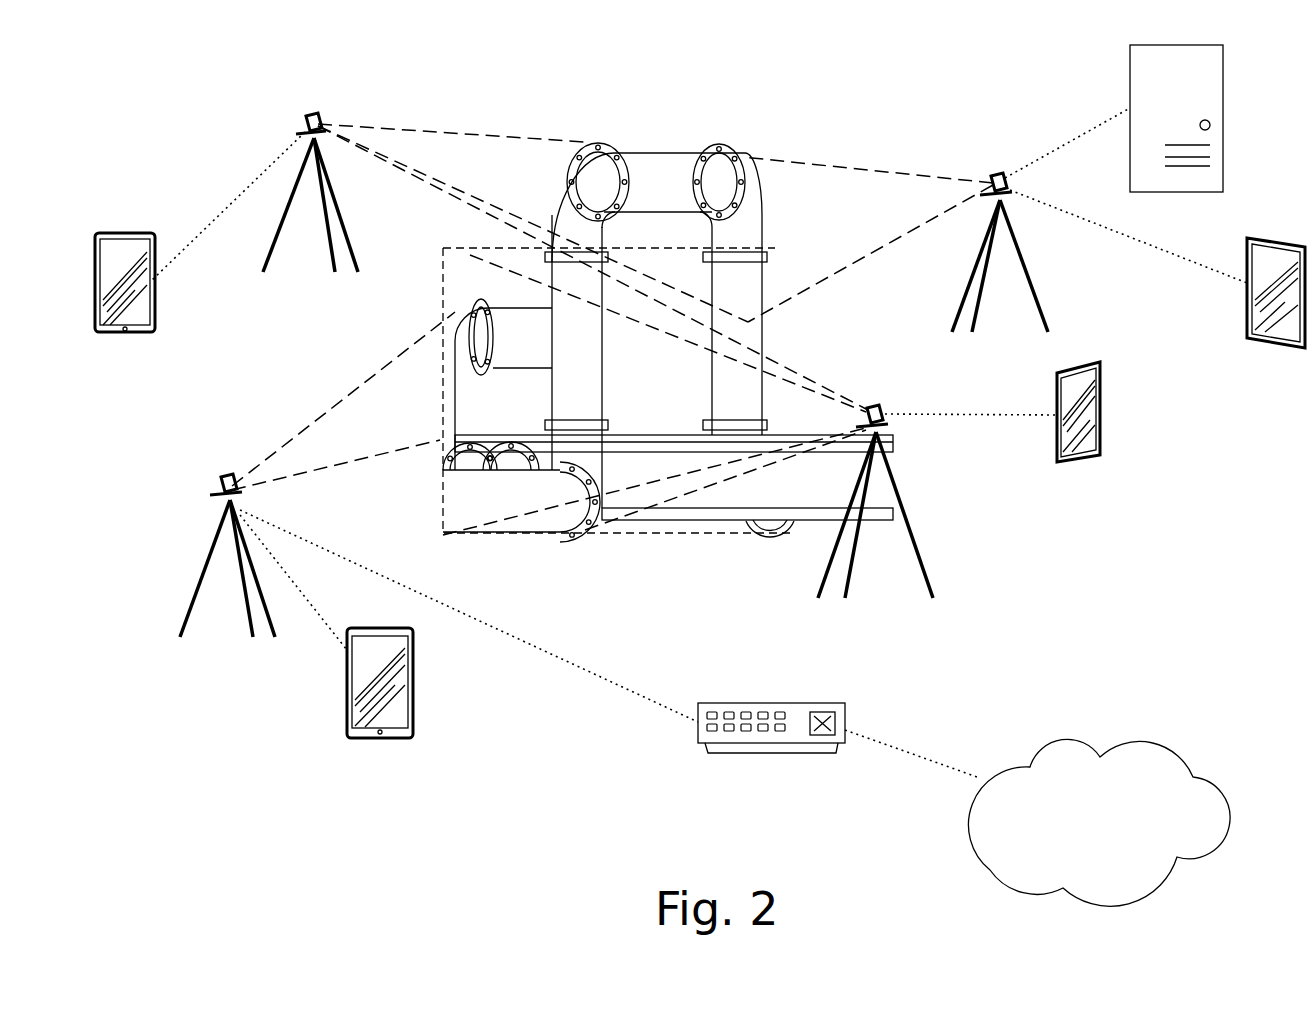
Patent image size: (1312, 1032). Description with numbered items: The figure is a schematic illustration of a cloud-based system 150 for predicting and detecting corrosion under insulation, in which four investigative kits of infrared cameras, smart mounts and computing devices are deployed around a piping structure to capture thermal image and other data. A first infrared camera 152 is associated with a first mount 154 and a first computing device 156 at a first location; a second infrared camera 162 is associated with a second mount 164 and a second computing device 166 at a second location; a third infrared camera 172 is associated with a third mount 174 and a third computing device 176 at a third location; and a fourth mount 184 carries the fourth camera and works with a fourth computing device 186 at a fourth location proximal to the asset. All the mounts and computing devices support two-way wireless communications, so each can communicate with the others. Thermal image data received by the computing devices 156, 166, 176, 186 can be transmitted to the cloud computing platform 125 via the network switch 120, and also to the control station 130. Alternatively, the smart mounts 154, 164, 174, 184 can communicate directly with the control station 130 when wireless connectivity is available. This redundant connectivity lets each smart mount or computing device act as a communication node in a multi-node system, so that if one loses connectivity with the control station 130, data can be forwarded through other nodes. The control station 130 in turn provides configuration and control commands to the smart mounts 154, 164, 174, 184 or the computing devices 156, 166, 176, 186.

The network switch 120 is at (745, 700).
The cloud computing platform 125 is at (1065, 742).
The control station 130 is at (1128, 72).
The system 150 is at (470, 76).
The first infrared camera 152 is at (302, 118).
The first mount 154 is at (273, 255).
The first computing device 156 is at (120, 232).
The second infrared camera 162 is at (215, 480).
The second mount 164 is at (200, 580).
The second computing device 166 is at (413, 695).
The third infrared camera 172 is at (884, 410).
The third mount 174 is at (906, 528).
The third computing device 176 is at (1100, 424).
The fourth mount 184 is at (1000, 175).
The fourth computing device 186 is at (1247, 318).